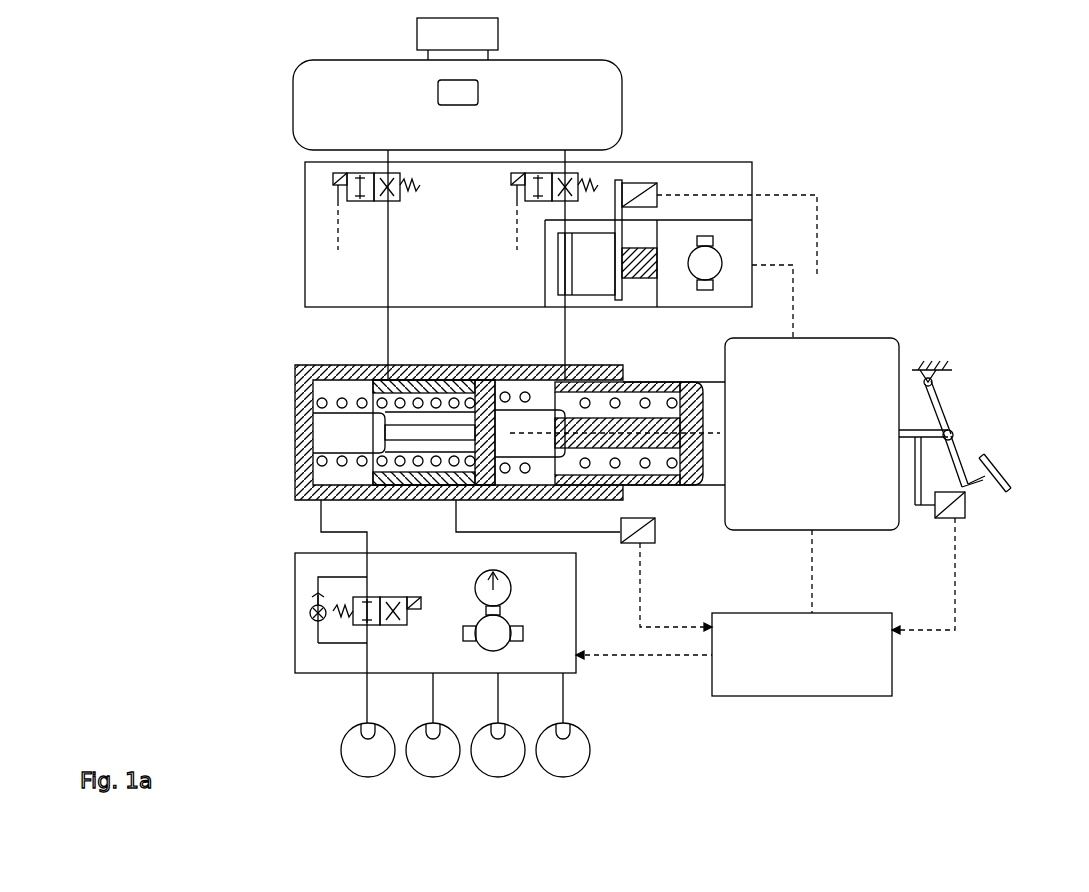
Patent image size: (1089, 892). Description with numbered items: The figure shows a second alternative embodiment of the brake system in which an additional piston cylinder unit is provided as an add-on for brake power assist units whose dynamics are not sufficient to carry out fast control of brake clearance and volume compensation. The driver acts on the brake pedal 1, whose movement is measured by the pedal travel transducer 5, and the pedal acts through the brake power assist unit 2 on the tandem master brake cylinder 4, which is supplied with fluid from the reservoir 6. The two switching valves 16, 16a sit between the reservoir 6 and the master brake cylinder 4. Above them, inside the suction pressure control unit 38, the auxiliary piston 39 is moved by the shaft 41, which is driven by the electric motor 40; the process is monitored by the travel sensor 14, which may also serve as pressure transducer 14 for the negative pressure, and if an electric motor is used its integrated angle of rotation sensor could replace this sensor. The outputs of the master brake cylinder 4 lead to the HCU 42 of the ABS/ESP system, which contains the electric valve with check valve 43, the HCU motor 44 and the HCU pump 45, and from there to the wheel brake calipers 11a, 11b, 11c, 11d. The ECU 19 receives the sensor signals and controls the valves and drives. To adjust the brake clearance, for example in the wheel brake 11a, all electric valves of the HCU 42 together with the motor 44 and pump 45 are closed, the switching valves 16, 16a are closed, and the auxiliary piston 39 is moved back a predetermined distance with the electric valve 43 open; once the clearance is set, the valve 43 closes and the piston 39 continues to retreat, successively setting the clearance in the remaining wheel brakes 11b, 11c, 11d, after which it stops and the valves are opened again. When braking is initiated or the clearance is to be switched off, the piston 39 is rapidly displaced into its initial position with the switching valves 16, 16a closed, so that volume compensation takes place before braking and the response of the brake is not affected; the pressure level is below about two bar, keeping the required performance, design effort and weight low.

The brake pedal 1 is at (945, 410).
The brake power assist unit (BKV) 2 is at (825, 385).
The tandem master brake cylinder (THZ) 4 is at (297, 397).
The pedal travel transducer 5 is at (968, 508).
The reservoir 6 is at (320, 108).
The brake caliper 11a is at (357, 745).
The brake caliper 11b is at (437, 762).
The brake caliper 11c is at (502, 765).
The brake caliper 11d is at (565, 755).
The travel sensor 14 is at (630, 200).
The switching valve 16 is at (580, 178).
The switching valve 16a is at (333, 183).
The ECU 19 is at (856, 676).
The suction pressure control unit 38 is at (304, 282).
The auxiliary piston 39 is at (590, 272).
The electric motor 40 is at (710, 262).
The shaft 41 is at (652, 248).
The HCU (ABS, ESP) 42 is at (305, 571).
The electric valve with check valve 43 is at (318, 637).
The HCU motor 44 is at (488, 637).
The HCU pump 45 is at (493, 585).